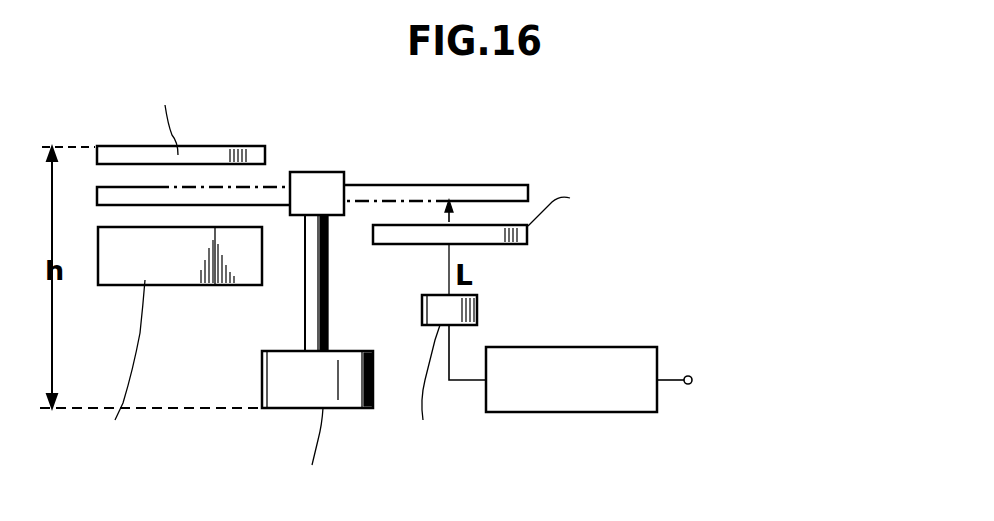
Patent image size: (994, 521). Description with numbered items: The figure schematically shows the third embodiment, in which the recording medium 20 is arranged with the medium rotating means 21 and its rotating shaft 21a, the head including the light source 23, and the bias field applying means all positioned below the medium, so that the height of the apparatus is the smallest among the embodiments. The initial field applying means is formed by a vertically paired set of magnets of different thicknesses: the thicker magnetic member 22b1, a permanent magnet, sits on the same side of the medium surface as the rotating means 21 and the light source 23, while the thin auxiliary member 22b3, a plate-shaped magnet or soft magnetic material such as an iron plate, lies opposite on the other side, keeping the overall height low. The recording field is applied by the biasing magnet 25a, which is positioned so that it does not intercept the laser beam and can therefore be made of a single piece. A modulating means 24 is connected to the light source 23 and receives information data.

The recording medium 20 is at (500, 182).
The medium rotating means 21 is at (330, 408).
The rotating shaft 21a is at (357, 311).
The magnetic member 22b1 is at (183, 287).
The auxiliary member 22b3 is at (190, 146).
The light source 23 is at (477, 320).
The modulating means 24 is at (585, 412).
The magnet 25a is at (527, 232).